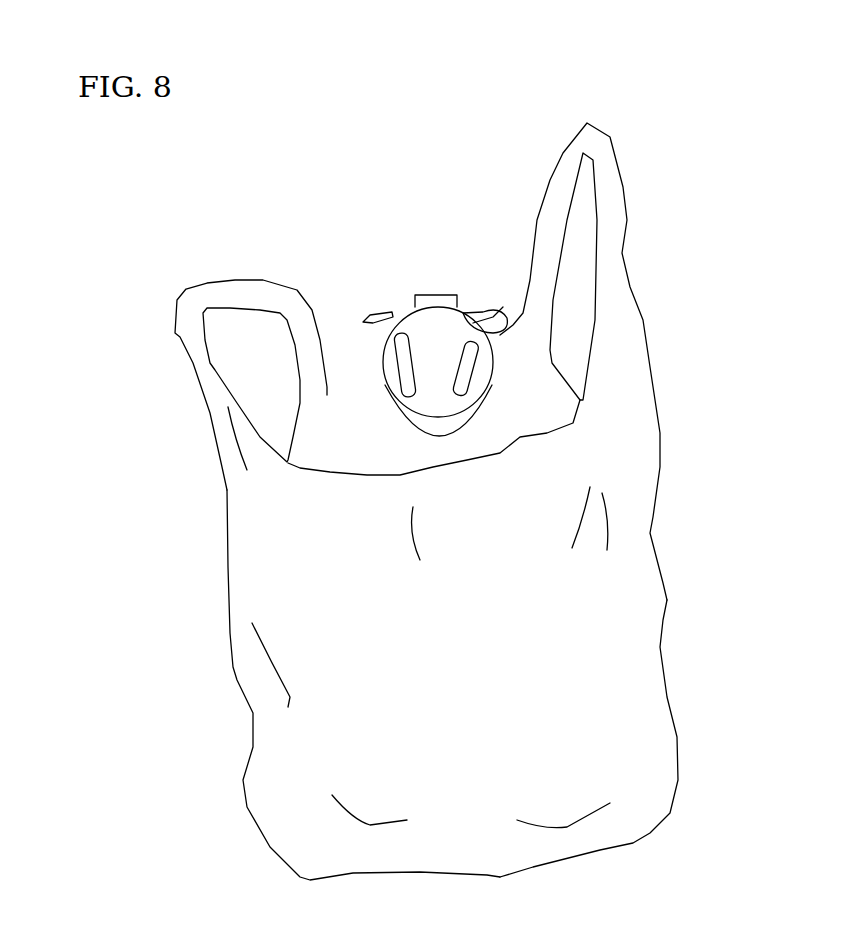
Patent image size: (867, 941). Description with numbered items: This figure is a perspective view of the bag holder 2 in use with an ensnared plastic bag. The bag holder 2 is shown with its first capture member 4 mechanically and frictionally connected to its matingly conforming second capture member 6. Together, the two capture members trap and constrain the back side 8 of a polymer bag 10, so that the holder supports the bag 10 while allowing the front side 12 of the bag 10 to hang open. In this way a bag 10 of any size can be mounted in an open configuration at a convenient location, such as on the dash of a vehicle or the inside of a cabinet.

The bag holder 2 is at (401, 288).
The first capture member 4 is at (453, 322).
The second capture member 6 is at (503, 307).
The back side 8 is at (363, 323).
The polymer bag 10 is at (127, 688).
The front side 12 is at (628, 640).